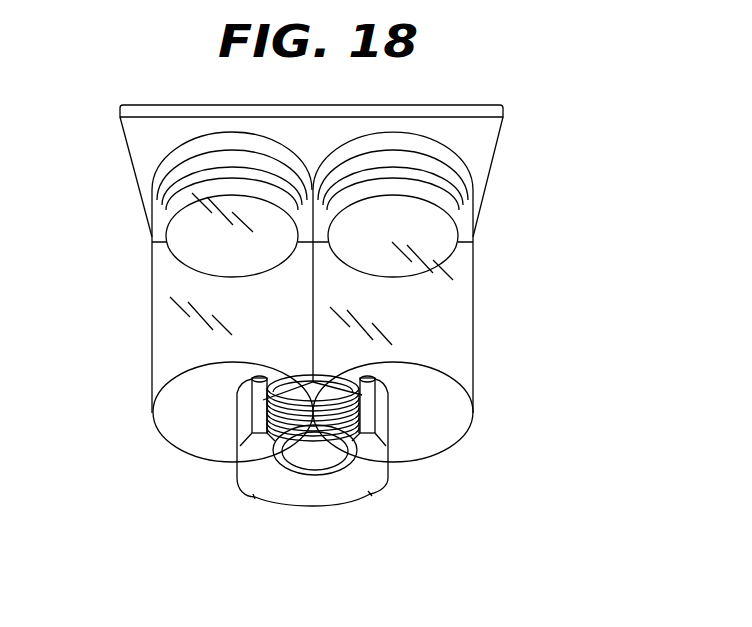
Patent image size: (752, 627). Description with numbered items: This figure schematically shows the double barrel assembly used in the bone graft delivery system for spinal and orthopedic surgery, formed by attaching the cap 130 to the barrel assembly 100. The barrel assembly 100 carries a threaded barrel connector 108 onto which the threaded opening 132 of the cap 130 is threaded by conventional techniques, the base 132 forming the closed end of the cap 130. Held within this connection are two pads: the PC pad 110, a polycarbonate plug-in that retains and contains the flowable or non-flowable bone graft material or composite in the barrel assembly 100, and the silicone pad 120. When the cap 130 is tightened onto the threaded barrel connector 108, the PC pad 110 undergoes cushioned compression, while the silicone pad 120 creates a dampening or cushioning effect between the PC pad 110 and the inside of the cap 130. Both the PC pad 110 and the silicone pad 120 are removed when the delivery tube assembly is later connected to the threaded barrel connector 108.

The barrel assembly 100 is at (505, 233).
The threaded barrel connector 108 is at (407, 427).
The PC pad 110 is at (218, 412).
The silicone pad 120 is at (227, 430).
The cap 130 is at (470, 487).
The base 132 is at (400, 498).